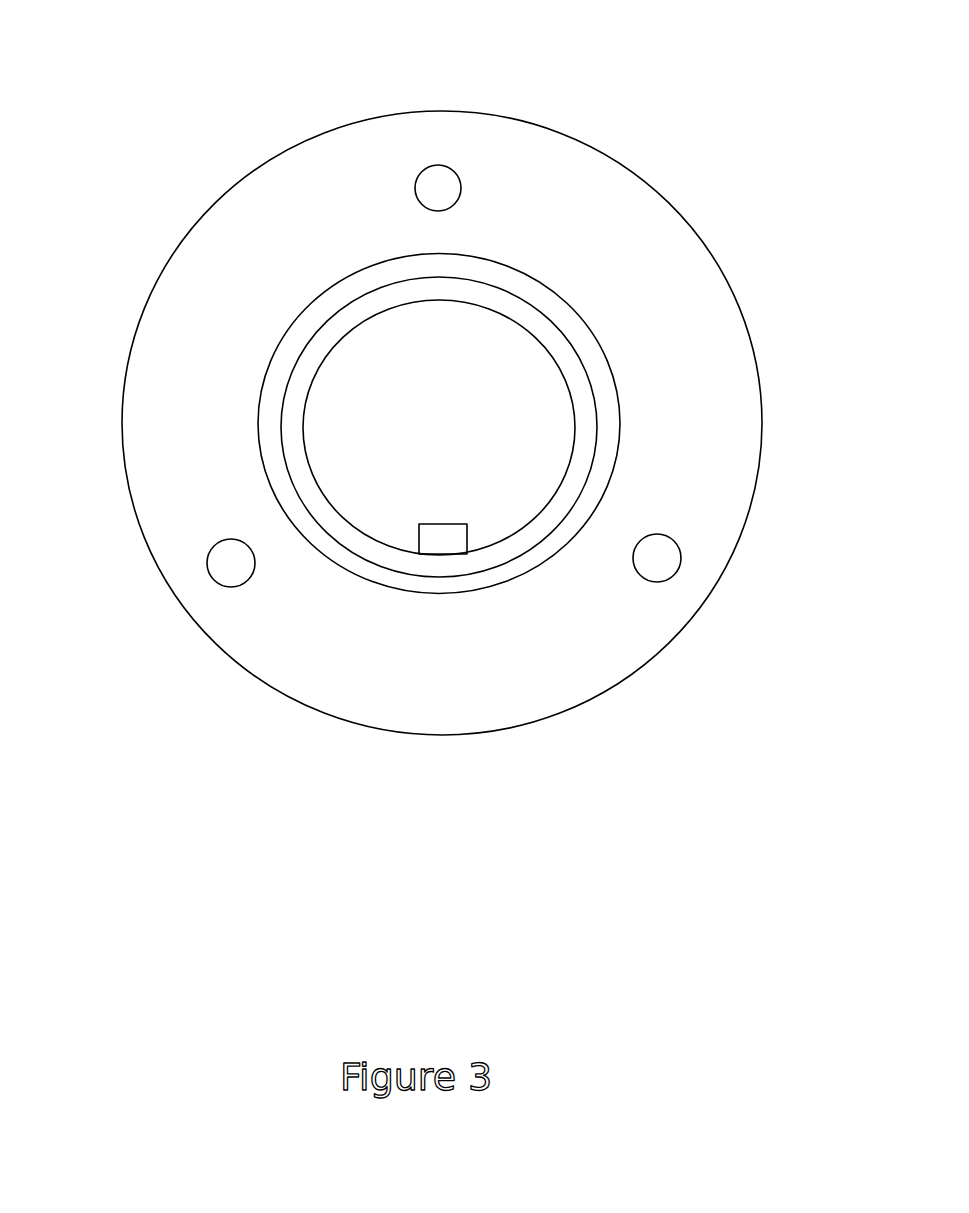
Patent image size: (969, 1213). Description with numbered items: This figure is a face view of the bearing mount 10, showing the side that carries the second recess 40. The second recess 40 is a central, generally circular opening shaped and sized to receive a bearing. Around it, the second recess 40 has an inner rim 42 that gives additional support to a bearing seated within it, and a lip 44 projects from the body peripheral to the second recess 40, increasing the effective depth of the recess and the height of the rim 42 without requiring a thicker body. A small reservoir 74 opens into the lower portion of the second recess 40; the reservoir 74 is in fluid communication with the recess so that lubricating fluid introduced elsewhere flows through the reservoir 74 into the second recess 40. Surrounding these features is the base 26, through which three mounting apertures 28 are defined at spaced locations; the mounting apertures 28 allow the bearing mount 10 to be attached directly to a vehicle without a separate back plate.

The bearing mount 10 is at (732, 158).
The base 26 is at (618, 212).
The mounting apertures 28 is at (439, 187).
The second recess 40 is at (508, 432).
The inner rim 42 is at (580, 404).
The lip 44 is at (587, 348).
The reservoir 74 is at (445, 540).